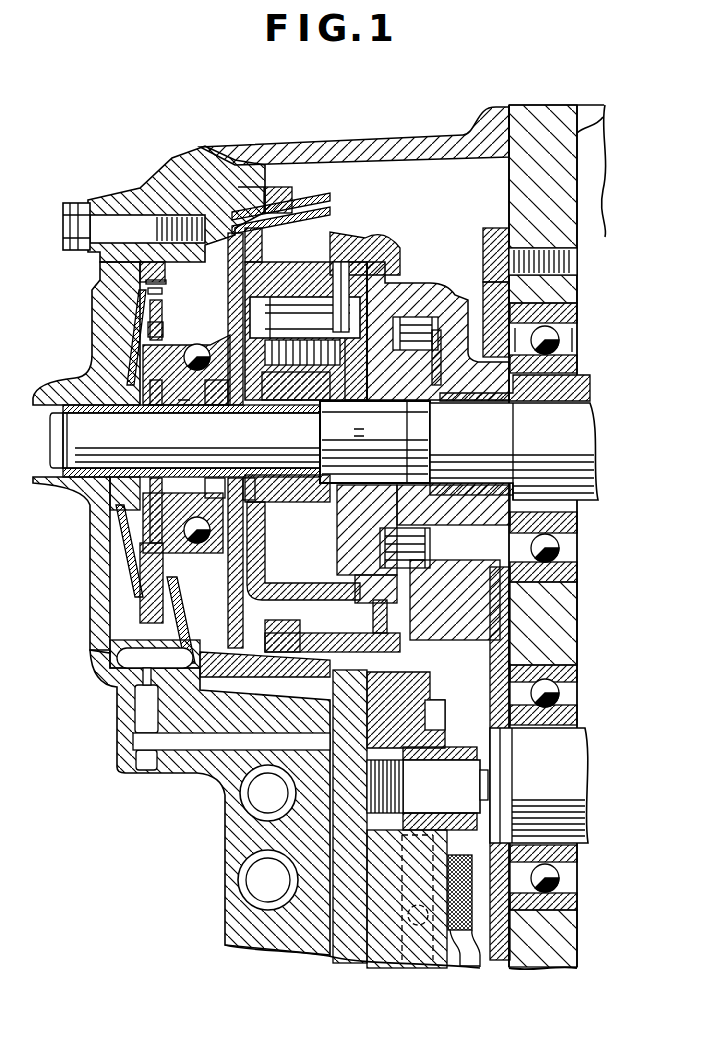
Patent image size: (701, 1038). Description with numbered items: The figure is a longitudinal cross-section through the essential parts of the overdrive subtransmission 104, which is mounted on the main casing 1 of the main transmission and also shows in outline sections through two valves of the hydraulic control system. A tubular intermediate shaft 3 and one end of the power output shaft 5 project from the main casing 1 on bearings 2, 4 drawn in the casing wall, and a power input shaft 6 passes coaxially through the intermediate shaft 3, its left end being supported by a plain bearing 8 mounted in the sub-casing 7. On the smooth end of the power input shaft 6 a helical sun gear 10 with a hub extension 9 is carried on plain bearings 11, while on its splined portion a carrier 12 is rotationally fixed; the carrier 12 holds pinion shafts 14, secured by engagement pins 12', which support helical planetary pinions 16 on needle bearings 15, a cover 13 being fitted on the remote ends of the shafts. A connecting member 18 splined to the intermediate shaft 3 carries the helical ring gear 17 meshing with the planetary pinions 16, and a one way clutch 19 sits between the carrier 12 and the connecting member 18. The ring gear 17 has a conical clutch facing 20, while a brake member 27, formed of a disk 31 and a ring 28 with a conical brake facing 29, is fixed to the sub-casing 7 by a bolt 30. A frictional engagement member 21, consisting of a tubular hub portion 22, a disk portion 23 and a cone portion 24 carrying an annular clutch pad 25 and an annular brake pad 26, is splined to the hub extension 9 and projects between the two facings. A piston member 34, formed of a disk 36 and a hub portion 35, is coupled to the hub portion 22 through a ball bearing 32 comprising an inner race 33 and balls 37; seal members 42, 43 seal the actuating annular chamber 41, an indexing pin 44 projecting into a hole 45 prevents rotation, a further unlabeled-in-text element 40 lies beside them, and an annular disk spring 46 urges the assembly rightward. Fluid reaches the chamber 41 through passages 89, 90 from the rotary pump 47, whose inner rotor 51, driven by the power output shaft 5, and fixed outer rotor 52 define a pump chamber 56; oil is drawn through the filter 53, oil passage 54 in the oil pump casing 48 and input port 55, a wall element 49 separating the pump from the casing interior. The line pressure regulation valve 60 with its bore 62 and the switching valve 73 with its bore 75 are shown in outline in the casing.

The main casing 1 is at (530, 125).
The ball bearing 2 is at (560, 344).
The tubular intermediate shaft 3 is at (580, 391).
The ball bearing 4 is at (560, 694).
The power output shaft 5 is at (575, 752).
The power input shaft 6 is at (585, 426).
The sub-casing 7 is at (72, 385).
The plain bearing 8 is at (75, 500).
The hub extension 9 is at (200, 405).
The helical sun gear 10 is at (322, 383).
The plain bearings 11 is at (182, 402).
The carrier 12 is at (416, 448).
The engagement pins 12' is at (374, 301).
The cover 13 is at (255, 280).
The pinion shafts 14 is at (340, 337).
The needle bearings 15 is at (330, 297).
The helical planetary pinions 16 is at (344, 433).
The helical ring gear 17 is at (490, 258).
The connecting member 18 is at (420, 296).
The one way clutch 19 is at (440, 330).
The conical clutch facing 20 is at (345, 262).
The frictional engagement member 21 is at (305, 317).
The tubular hub portion 22 is at (225, 405).
The disk portion 23 is at (287, 317).
The cone portion 24 is at (318, 218).
The annular clutch pad 25 is at (250, 245).
The annular brake pad 26 is at (300, 212).
The brake member 27 is at (200, 205).
The ring 28 is at (248, 205).
The conical brake facing 29 is at (280, 189).
The bolt 30 is at (115, 222).
The disk 31 is at (236, 242).
The ball bearing 32 is at (226, 360).
The inner race 33 is at (252, 404).
The piston member 34 is at (148, 340).
The hub portion 35 is at (118, 406).
The disk 36 is at (140, 318).
The balls 37 is at (190, 440).
The shim 40 is at (145, 283).
The annular chamber 41 is at (155, 225).
The seal member 42 is at (142, 272).
The seal member 43 is at (160, 406).
The indexing pin 44 is at (150, 291).
The hole 45 is at (150, 330).
The annular disk spring 46 is at (128, 552).
The rotary hydraulic fluid pressure pump 47 is at (415, 746).
The oil pump casing 48 is at (348, 636).
The partition wall 49 is at (345, 694).
The inner rotor 51 is at (418, 760).
The outer rotor 52 is at (410, 690).
The filter 53 is at (480, 937).
The oil passage 54 is at (410, 952).
The input port 55 is at (455, 860).
The pump chamber 56 is at (432, 714).
The line pressure regulation valve 60 is at (250, 814).
The bore 62 is at (255, 797).
The switching valve 73 is at (255, 897).
The bore 75 is at (255, 884).
The passage 89 is at (197, 750).
The passage 90 is at (140, 716).
The subtransmission 104 is at (395, 152).